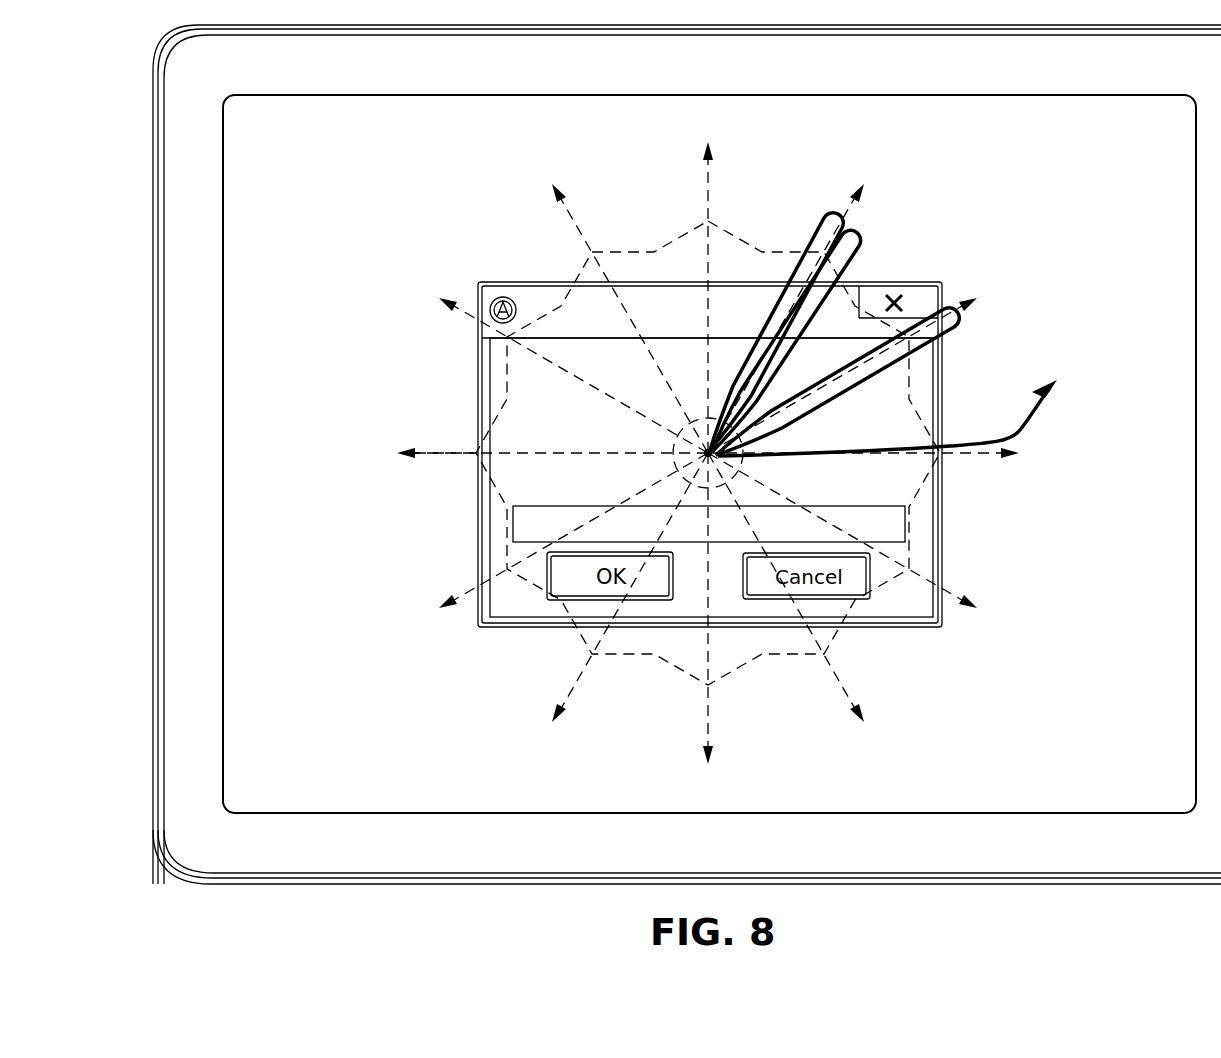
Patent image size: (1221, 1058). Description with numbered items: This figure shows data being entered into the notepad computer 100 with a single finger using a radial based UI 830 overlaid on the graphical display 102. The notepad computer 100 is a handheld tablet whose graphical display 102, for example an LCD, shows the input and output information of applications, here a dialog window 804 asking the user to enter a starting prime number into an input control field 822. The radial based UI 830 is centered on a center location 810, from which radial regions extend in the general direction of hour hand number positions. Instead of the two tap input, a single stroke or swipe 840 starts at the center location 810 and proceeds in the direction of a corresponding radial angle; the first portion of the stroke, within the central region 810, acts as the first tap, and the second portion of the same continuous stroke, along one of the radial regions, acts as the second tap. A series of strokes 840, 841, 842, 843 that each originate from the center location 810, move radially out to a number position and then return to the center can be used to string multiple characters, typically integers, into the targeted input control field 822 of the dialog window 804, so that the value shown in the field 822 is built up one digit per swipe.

The notepad computer 100 is at (152, 176).
The graphical display 102 is at (348, 191).
The dialog window 804 is at (534, 283).
The center location 810 is at (680, 462).
The text input field 822 is at (515, 528).
The radial based UI 830 is at (440, 452).
The single stroke or swipe 840 is at (826, 230).
The stroke 841 is at (863, 242).
The stroke 842 is at (963, 328).
The stroke 843 is at (984, 440).